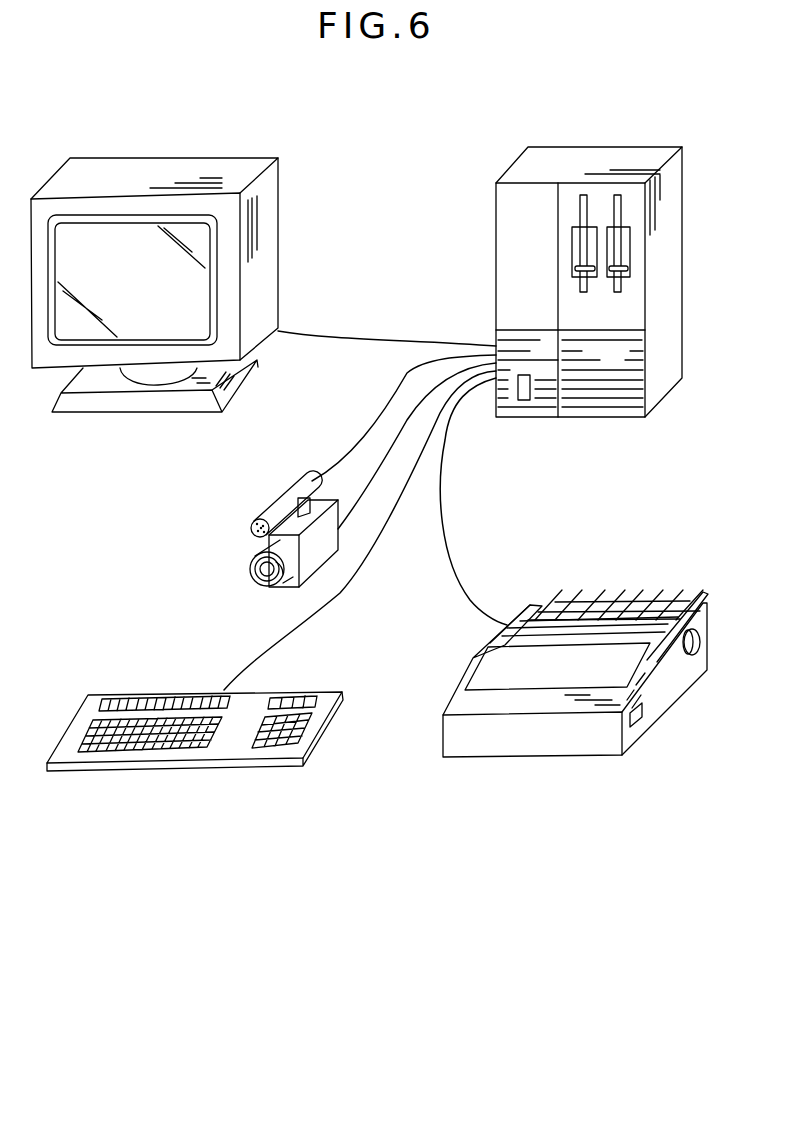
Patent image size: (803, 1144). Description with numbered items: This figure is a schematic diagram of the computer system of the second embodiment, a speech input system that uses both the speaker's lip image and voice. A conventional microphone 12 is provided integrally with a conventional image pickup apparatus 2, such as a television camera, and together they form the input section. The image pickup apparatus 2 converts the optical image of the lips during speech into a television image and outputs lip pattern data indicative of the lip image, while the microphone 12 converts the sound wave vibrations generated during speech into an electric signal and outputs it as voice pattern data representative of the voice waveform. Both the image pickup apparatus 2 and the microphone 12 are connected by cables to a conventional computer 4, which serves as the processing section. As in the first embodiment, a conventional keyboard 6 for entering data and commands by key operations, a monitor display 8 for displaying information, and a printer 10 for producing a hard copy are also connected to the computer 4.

The image pickup apparatus 2 is at (288, 580).
The computer 4 is at (515, 217).
The keyboard 6 is at (237, 743).
The monitor display 8 is at (262, 223).
The printer 10 is at (530, 742).
The microphone 12 is at (272, 512).